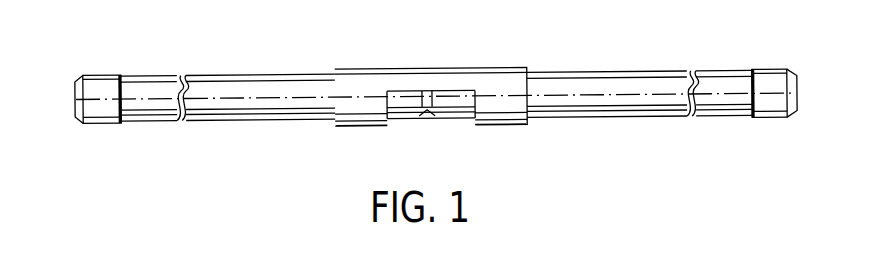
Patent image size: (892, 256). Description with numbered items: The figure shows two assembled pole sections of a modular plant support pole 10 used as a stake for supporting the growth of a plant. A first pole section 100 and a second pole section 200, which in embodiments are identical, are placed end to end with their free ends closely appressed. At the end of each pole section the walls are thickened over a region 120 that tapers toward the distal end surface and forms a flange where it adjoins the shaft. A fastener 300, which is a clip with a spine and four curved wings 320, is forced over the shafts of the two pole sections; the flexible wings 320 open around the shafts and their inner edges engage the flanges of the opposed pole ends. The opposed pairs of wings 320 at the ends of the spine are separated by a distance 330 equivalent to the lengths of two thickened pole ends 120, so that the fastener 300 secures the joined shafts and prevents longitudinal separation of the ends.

The plant support pole 10 is at (465, 45).
The first pole section 100 is at (230, 77).
The thickened region 120 is at (97, 75).
The second pole section 200 is at (663, 57).
The fastener 300 is at (514, 96).
The curved wings 320 is at (355, 110).
The distance 330 is at (470, 131).